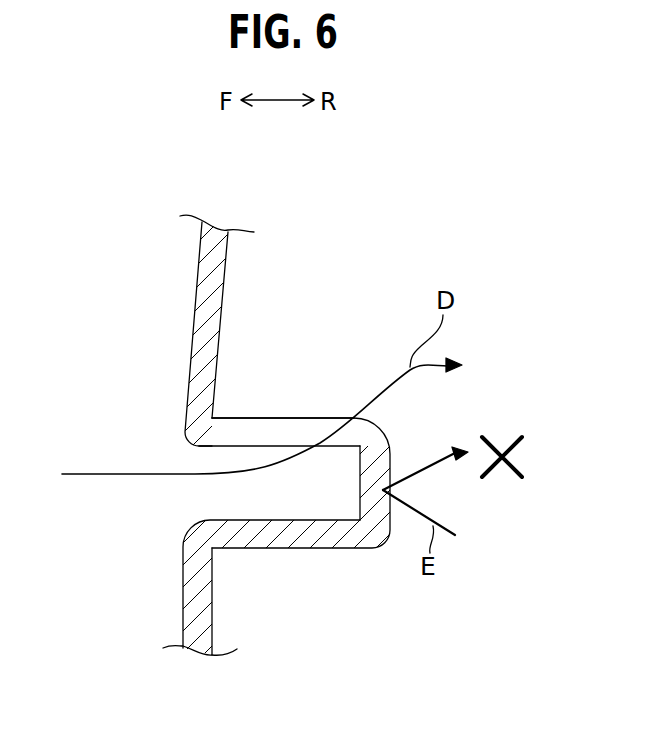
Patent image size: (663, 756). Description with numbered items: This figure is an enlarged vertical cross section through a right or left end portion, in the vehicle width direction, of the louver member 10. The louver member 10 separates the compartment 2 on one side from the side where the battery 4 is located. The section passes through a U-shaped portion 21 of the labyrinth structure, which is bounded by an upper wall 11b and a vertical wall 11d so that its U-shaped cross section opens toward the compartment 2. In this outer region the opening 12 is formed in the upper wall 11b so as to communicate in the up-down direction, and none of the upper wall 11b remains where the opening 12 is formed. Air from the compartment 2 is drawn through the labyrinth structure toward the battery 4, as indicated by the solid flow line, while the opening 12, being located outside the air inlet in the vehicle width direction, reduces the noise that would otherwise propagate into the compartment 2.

The louver member 10 is at (153, 244).
The compartment 2 is at (82, 344).
The battery 4 is at (528, 337).
The upper wall 11b is at (243, 417).
The opening 12 is at (297, 417).
The vertical wall 11d is at (392, 463).
The U-shaped portion 21 is at (181, 508).